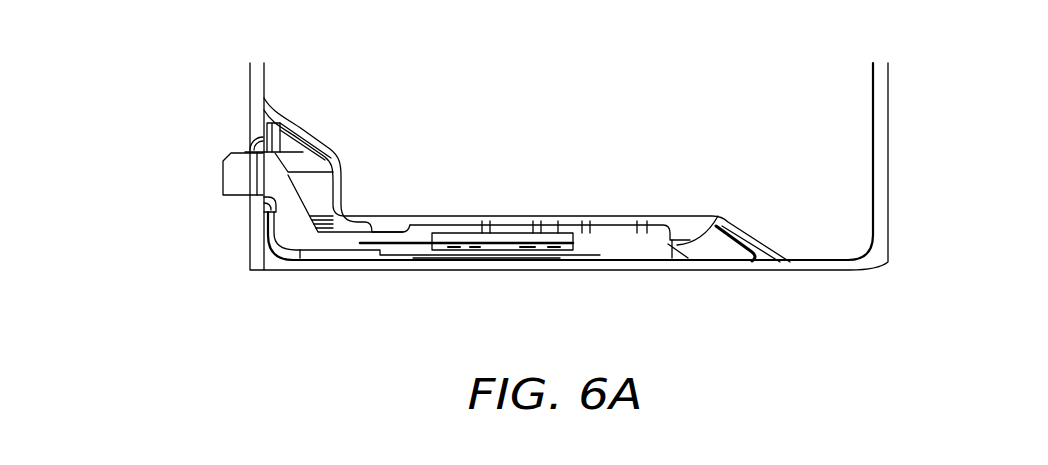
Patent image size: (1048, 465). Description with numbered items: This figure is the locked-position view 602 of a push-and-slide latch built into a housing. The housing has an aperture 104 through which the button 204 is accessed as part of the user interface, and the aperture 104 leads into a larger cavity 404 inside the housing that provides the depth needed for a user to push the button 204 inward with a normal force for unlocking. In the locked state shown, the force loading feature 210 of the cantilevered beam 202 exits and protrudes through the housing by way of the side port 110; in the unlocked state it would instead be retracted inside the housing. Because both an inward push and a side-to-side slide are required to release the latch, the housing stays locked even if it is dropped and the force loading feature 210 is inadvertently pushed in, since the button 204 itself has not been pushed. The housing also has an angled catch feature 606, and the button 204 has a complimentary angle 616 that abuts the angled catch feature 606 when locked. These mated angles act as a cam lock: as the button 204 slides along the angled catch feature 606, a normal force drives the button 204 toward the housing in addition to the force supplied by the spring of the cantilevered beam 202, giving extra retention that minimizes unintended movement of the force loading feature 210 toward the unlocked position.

The aperture 104 is at (506, 272).
The side port 110 is at (256, 150).
The force loading feature 210 is at (237, 181).
The cantilevered beam 202 is at (278, 237).
The button 204 is at (613, 250).
The complimentary angle 616 is at (660, 250).
The cavity 404 is at (712, 250).
The angled catch feature 606 is at (714, 226).
The view of locked position 602 is at (971, 174).